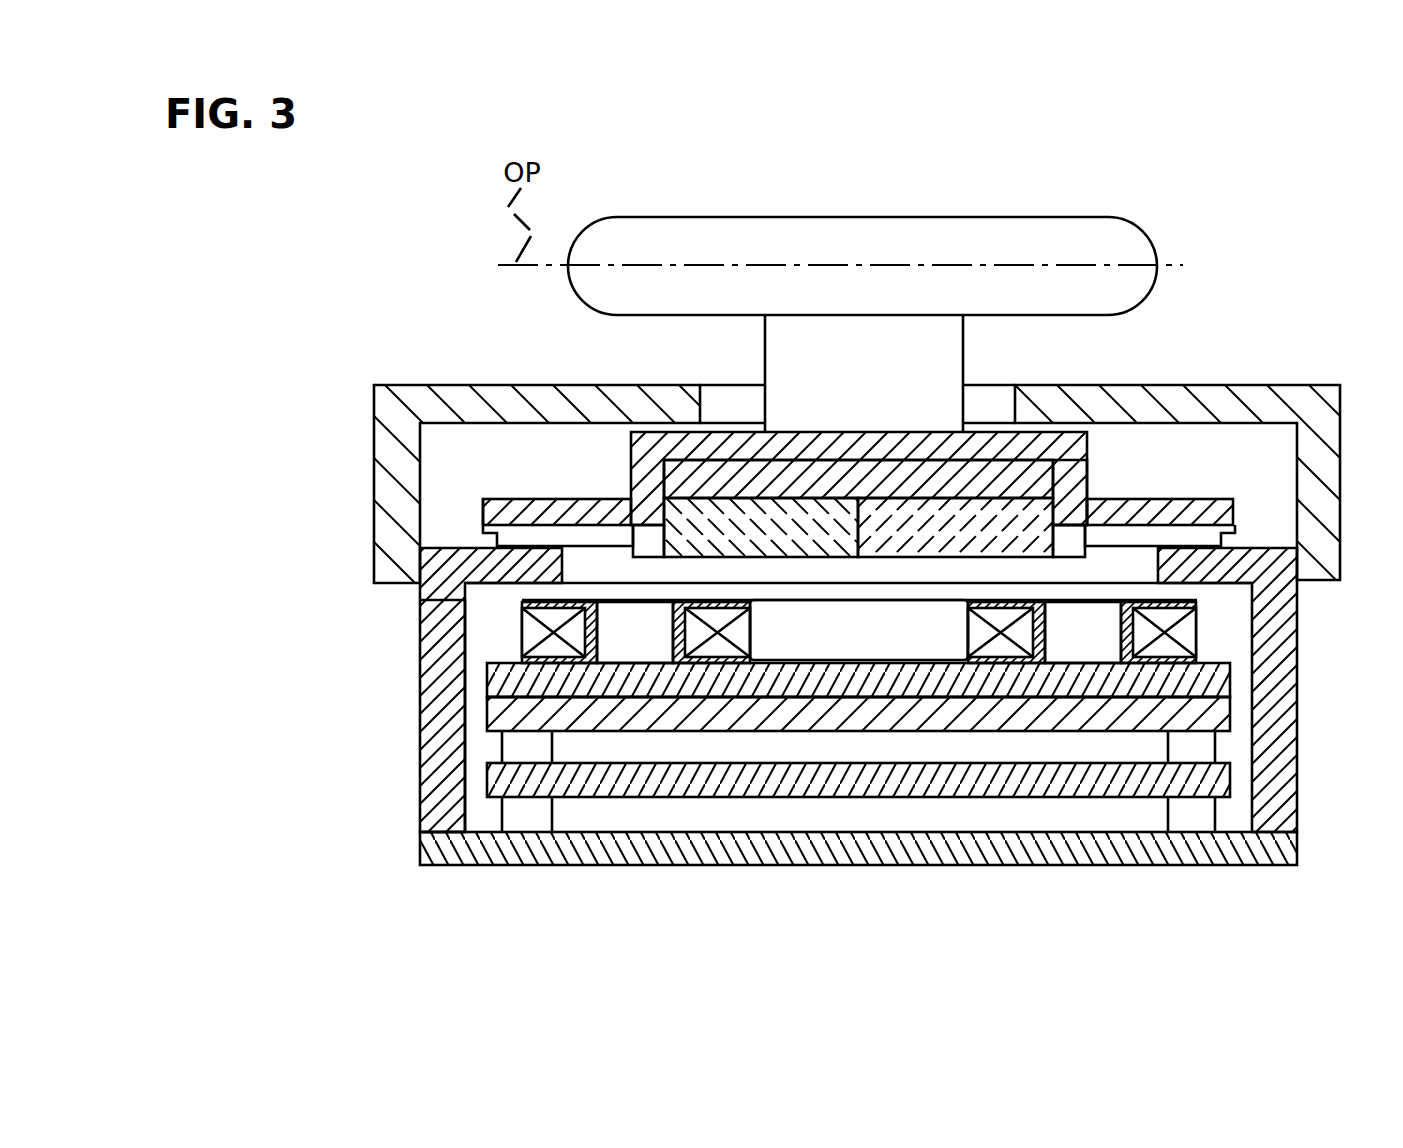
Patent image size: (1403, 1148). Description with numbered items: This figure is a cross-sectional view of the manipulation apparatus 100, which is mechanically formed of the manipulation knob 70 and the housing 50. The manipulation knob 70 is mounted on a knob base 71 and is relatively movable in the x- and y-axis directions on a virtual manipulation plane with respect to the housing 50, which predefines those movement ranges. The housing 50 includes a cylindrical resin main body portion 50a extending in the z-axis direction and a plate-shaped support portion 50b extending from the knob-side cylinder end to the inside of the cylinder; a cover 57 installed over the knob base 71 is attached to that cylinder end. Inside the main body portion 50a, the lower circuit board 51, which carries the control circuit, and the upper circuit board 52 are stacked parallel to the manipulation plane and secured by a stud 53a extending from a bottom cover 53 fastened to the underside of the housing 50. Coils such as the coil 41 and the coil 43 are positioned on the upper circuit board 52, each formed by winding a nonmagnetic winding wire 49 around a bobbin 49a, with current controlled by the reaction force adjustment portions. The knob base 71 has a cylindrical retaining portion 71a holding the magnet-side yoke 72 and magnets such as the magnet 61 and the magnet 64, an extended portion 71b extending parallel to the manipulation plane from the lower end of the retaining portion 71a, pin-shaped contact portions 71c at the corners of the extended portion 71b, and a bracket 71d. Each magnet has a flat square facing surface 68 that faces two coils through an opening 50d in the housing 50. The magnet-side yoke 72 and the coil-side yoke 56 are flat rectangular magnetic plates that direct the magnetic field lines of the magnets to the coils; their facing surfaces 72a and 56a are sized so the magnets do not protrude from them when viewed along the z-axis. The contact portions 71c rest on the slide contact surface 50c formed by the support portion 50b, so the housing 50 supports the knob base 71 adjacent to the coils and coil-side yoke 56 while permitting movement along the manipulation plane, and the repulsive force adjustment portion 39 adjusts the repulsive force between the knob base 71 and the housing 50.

The repulsive force adjustment portion 39 is at (867, 753).
The coil 41 is at (1097, 645).
The coil 43 is at (640, 645).
The winding wire 49 is at (1167, 645).
The bobbin 49a is at (1195, 590).
The housing 50 is at (763, 601).
The main body portion 50a is at (430, 622).
The support portion 50b is at (440, 585).
The slide contact surface 50c is at (420, 550).
The opening 50d is at (1170, 548).
The circuit board 51 is at (497, 780).
The circuit board 52 is at (490, 672).
The bottom cover 53 is at (432, 855).
The stud 53a is at (528, 817).
The coil-side yoke 56 is at (765, 718).
The facing surface 56a is at (820, 690).
The cover 57 is at (385, 425).
The magnet 61 is at (1035, 490).
The magnet 64 is at (722, 517).
The facing surface 68 is at (810, 558).
The manipulation knob 70 is at (968, 217).
The knob base 71 is at (647, 537).
The retaining portion 71a is at (577, 527).
The extended portion 71b is at (485, 546).
The contact portion 71c is at (478, 512).
The bracket 71d is at (540, 535).
The magnet-side yoke 72 is at (1075, 537).
The facing surface 72a is at (1040, 472).
The manipulation apparatus 100 is at (911, 271).